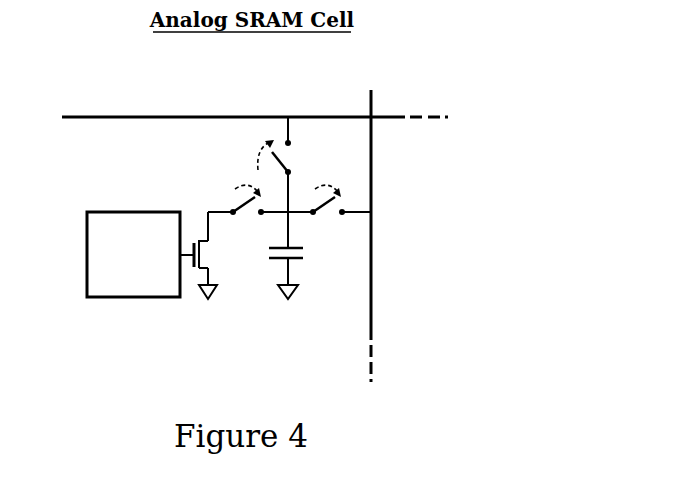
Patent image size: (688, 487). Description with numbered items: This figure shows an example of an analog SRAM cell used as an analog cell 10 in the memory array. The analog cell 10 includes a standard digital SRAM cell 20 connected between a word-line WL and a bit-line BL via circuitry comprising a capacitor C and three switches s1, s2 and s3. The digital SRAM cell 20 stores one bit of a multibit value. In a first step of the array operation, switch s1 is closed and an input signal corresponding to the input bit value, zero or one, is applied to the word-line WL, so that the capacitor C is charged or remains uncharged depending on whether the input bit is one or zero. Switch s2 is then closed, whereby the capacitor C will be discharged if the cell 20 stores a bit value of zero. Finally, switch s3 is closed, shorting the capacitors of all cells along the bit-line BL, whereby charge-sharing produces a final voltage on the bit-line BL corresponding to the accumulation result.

The analog cell 10 is at (486, 97).
The digital SRAM cell 20 is at (123, 289).
The word-line WL is at (235, 116).
The bit-line BL is at (372, 221).
The switch s1 is at (288, 146).
The switch s2 is at (247, 212).
The switch s3 is at (327, 212).
The capacitor C is at (297, 271).